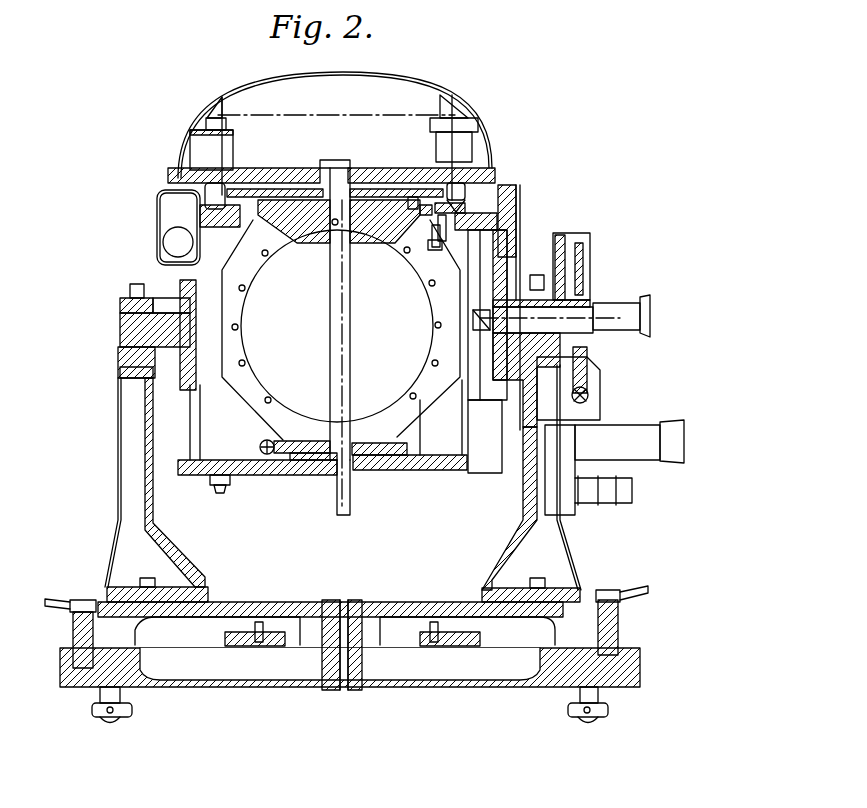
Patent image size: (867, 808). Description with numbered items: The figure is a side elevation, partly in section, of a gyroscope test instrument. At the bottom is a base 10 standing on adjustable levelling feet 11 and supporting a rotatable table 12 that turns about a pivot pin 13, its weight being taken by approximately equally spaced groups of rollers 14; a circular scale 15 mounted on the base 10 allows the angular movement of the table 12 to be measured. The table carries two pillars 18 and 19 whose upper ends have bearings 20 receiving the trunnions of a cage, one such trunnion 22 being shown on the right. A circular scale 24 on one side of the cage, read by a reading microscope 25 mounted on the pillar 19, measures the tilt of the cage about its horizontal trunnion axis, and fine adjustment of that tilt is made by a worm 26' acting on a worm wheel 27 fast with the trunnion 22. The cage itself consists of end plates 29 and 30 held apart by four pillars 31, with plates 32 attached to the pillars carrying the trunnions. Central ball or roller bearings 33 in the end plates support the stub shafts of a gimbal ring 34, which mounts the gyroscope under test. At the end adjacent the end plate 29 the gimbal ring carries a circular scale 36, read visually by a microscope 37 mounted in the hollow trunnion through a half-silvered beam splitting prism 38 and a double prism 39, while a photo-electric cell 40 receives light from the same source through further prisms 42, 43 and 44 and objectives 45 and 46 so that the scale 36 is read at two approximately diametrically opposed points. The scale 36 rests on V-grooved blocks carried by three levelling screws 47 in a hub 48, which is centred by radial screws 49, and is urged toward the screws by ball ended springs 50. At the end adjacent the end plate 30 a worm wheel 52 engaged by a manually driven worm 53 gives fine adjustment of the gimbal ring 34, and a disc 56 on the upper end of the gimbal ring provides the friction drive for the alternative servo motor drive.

The base 10 is at (215, 688).
The adjustable levelling feet 11 is at (92, 710).
The rotatable table 12 is at (268, 602).
The pivot pin 13 is at (330, 690).
The rollers 14 is at (100, 648).
The circular scale 15 is at (215, 636).
The pillar 18 is at (155, 500).
The pillar 19 is at (535, 500).
The bearings 20 is at (120, 306).
The trunnion 22 is at (120, 336).
The circular scale 24 is at (512, 455).
The reading microscope 25 is at (598, 425).
The worm 26' is at (613, 394).
The worm wheel 27 is at (588, 372).
The end plate 29 is at (270, 168).
The end plate 30 is at (252, 478).
The pillars 31 is at (198, 424).
The plates 32 is at (505, 262).
The ball or roller bearings 33 is at (335, 168).
The gimbal ring 34 is at (232, 345).
The circular scale 36 is at (466, 207).
The microscope 37 is at (606, 302).
The half-silvered beam splitting prism 38 is at (472, 320).
The double prism 39 is at (498, 221).
The photo-electric cell 40 is at (160, 240).
The prism 42 is at (452, 108).
The prism 43 is at (224, 112).
The prism 44 is at (215, 235).
The objective 45 is at (466, 192).
The objective 46 is at (205, 195).
The levelling screws 47 is at (442, 242).
The hub 48 is at (436, 246).
The radial screws 49 is at (412, 212).
The ball ended springs 50 is at (428, 215).
The worm wheel 52 is at (405, 458).
The worm 53 is at (258, 445).
The disc 56 is at (412, 186).